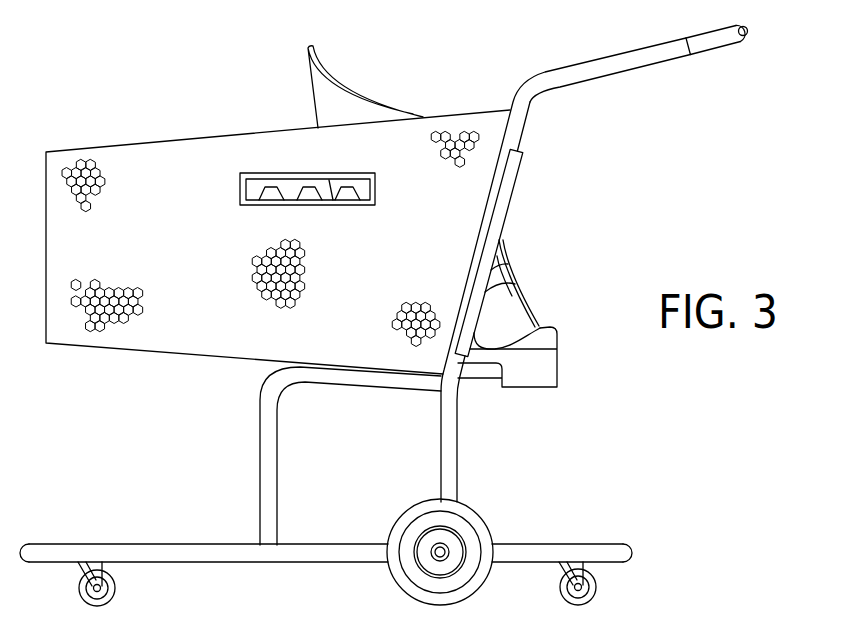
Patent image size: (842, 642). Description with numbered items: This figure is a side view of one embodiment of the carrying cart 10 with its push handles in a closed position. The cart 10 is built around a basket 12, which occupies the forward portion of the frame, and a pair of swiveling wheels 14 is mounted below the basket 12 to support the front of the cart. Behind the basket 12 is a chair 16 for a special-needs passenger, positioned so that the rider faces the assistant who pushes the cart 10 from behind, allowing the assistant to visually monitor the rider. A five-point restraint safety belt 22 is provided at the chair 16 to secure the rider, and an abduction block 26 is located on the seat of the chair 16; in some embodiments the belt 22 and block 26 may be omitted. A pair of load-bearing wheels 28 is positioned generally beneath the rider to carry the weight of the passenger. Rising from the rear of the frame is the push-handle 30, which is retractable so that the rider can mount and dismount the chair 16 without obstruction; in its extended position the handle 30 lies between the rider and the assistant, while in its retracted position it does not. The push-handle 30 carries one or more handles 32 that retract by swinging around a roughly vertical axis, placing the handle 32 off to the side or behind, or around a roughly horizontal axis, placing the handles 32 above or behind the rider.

The carrying cart 10 is at (129, 78).
The basket 12 is at (195, 258).
The swiveling wheels 14 is at (115, 587).
The chair 16 is at (291, 94).
The five-point restraint safety belt 22 is at (517, 273).
The abduction block 26 is at (553, 328).
The load-bearing wheels 28 is at (472, 517).
The push-handle 30 is at (632, 60).
The handle 32 is at (751, 29).